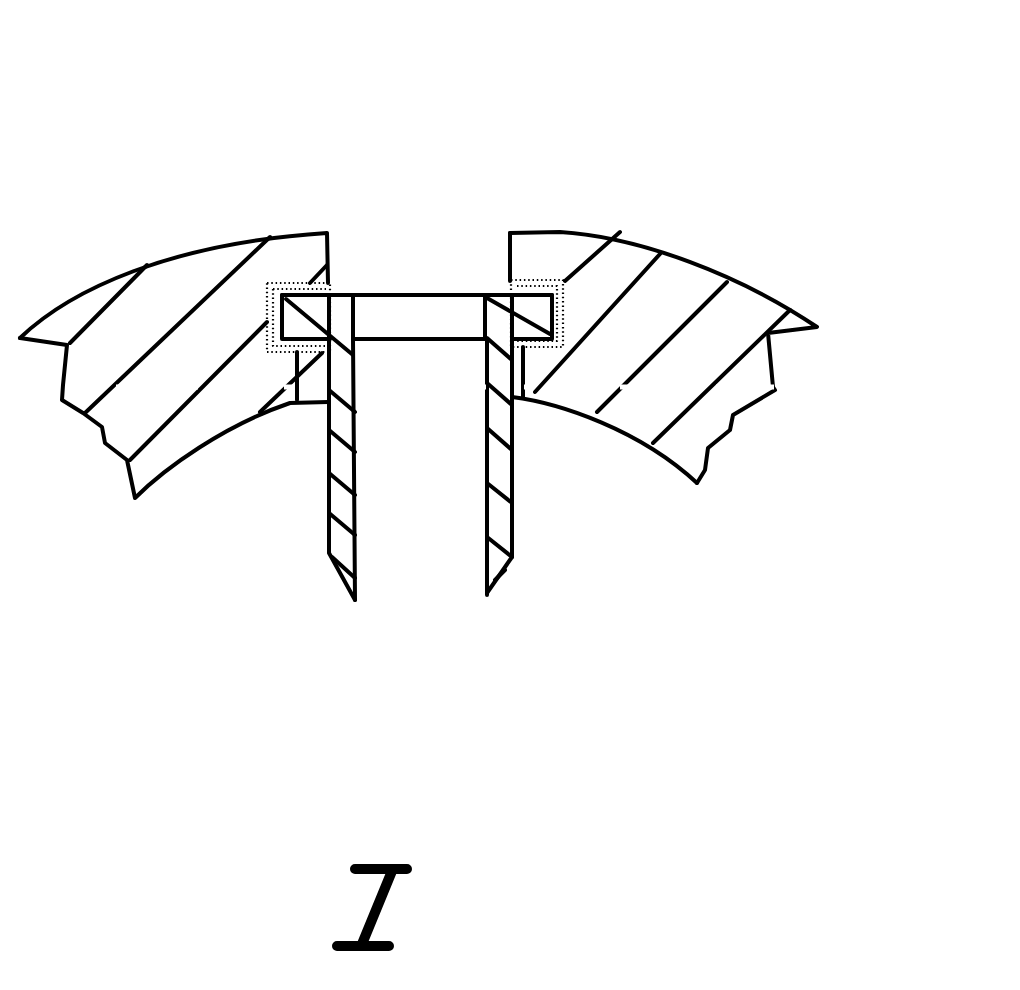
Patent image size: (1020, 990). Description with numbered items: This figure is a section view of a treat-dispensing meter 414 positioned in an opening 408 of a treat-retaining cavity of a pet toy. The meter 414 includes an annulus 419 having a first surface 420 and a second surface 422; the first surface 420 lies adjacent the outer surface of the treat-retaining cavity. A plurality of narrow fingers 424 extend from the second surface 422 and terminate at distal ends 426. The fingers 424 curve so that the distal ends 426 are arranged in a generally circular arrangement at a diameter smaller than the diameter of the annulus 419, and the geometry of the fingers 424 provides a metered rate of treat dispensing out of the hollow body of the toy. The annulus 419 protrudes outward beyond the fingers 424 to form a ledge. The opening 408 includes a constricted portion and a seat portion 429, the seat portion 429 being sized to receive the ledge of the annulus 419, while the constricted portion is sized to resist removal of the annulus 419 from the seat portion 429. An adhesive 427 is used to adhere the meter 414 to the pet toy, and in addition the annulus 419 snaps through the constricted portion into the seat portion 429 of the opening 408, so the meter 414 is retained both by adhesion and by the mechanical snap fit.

The opening 408 is at (504, 265).
The treat-dispensing meter 414 is at (490, 167).
The annulus 419 is at (333, 295).
The first surface 420 is at (500, 295).
The second surface 422 is at (523, 347).
The fingers 424 is at (487, 490).
The distal ends 426 is at (330, 560).
The adhesive 427 is at (572, 281).
The seat portion 429 is at (327, 452).